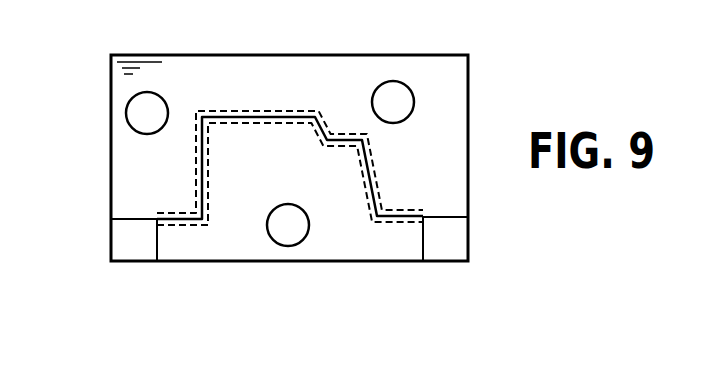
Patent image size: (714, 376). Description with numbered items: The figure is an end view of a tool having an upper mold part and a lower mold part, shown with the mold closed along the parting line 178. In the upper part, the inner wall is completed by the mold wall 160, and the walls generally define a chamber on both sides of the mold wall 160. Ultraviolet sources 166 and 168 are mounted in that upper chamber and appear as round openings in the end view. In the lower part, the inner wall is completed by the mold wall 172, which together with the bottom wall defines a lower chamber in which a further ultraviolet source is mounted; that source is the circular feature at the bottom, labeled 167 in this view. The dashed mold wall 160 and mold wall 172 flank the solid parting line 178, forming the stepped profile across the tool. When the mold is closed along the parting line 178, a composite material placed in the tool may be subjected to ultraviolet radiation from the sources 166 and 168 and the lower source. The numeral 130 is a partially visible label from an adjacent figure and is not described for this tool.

The housing plate 130 is at (504, 10).
The mold wall 160 is at (190, 154).
The ultraviolet source 166 is at (131, 109).
The hole 167 is at (289, 245).
The ultraviolet source 168 is at (402, 95).
The mold wall 172 is at (208, 202).
The parting line 178 is at (290, 168).